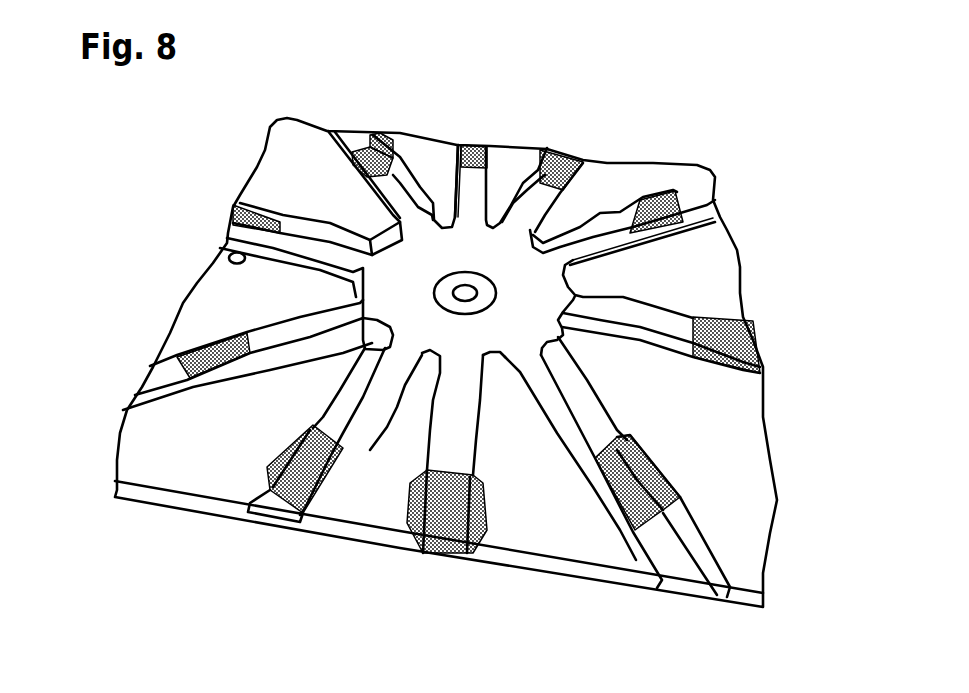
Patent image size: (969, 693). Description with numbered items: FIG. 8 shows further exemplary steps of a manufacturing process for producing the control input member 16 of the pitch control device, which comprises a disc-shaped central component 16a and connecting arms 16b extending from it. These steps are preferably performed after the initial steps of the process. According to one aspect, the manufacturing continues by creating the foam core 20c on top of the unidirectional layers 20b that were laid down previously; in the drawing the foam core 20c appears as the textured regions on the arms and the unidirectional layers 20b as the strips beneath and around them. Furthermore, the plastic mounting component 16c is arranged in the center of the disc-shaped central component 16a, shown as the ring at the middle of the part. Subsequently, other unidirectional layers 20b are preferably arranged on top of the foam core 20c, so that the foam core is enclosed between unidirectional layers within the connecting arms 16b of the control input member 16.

The control input member 16 is at (186, 170).
The disc-shaped central component 16a is at (362, 349).
The connecting arms 16b is at (692, 490).
The plastic mounting component 16c is at (443, 293).
The unidirectional layers 20b is at (661, 459).
The foam core 20c is at (457, 430).